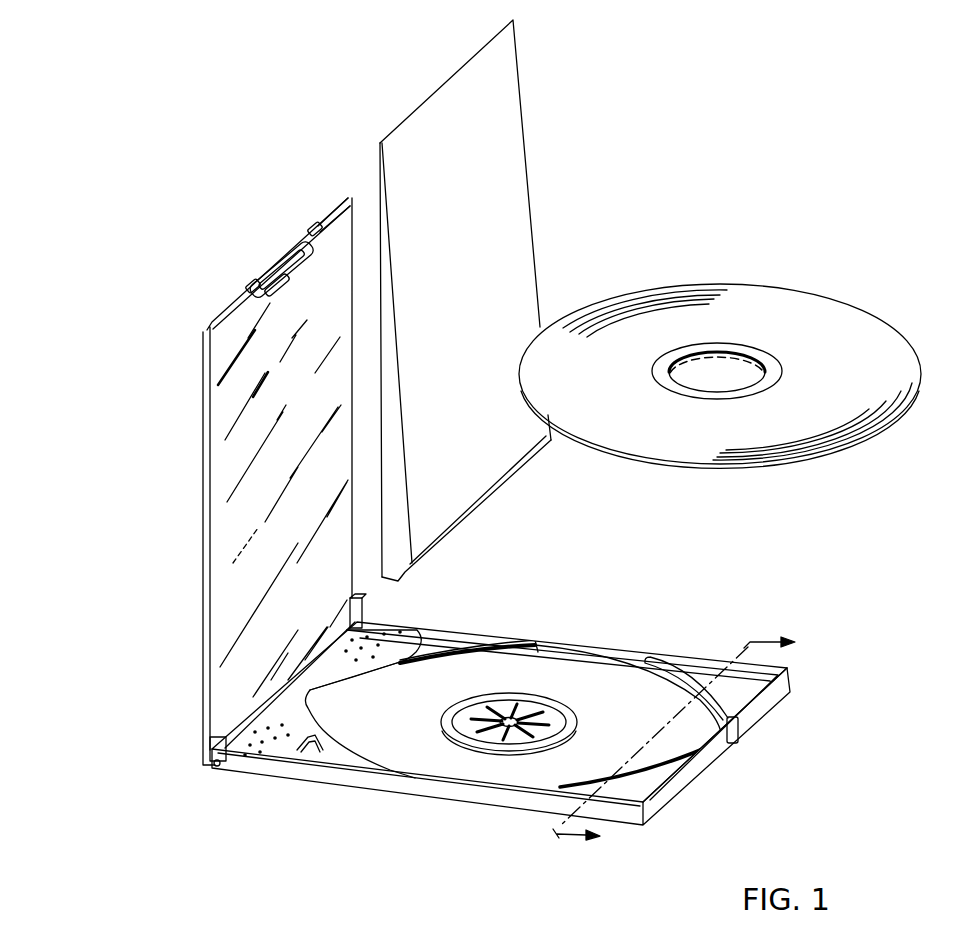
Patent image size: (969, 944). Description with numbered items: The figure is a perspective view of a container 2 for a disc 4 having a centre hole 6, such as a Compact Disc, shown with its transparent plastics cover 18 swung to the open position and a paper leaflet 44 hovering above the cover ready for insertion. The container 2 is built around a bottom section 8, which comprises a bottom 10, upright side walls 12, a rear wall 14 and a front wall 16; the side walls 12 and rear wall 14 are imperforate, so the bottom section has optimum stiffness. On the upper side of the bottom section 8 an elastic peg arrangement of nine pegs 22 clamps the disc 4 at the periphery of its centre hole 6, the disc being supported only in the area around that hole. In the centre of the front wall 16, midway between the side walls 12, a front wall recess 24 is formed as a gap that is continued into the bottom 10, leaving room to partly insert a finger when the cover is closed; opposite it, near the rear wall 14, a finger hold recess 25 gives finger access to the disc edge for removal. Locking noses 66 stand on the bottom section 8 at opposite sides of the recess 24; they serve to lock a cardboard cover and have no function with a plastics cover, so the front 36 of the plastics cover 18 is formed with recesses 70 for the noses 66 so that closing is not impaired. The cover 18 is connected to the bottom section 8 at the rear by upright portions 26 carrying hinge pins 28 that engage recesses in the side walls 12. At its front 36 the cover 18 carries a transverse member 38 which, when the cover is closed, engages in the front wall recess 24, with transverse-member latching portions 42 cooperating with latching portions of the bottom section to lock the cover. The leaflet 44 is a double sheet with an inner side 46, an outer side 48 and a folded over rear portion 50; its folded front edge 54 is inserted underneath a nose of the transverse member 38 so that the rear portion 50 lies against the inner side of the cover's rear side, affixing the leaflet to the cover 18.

The container 2 is at (506, 717).
The disc 4 is at (720, 342).
The centre hole 6 is at (742, 375).
The bottom section 8 is at (556, 640).
The bottom 10 is at (740, 729).
The side walls 12 is at (452, 628).
The rear wall 14 is at (332, 652).
The front wall 16 is at (670, 789).
The cover 18 is at (260, 448).
The pegs 22 is at (524, 742).
The front wall recess 24 is at (733, 749).
The finger hold recess 25 is at (324, 700).
The upright portions 26 is at (364, 608).
The hinge pins 28 is at (222, 770).
The front 36 is at (323, 222).
The transverse member 38 is at (268, 270).
The transverse-member latching portions 42 is at (280, 289).
The paper leaflet 44 is at (490, 305).
The inner side 46 is at (515, 308).
The outer side 48 is at (390, 535).
The folded over rear portion 50 is at (410, 574).
The folded front edge 54 is at (458, 92).
The locking noses 66 is at (688, 752).
The recesses 70 is at (310, 240).